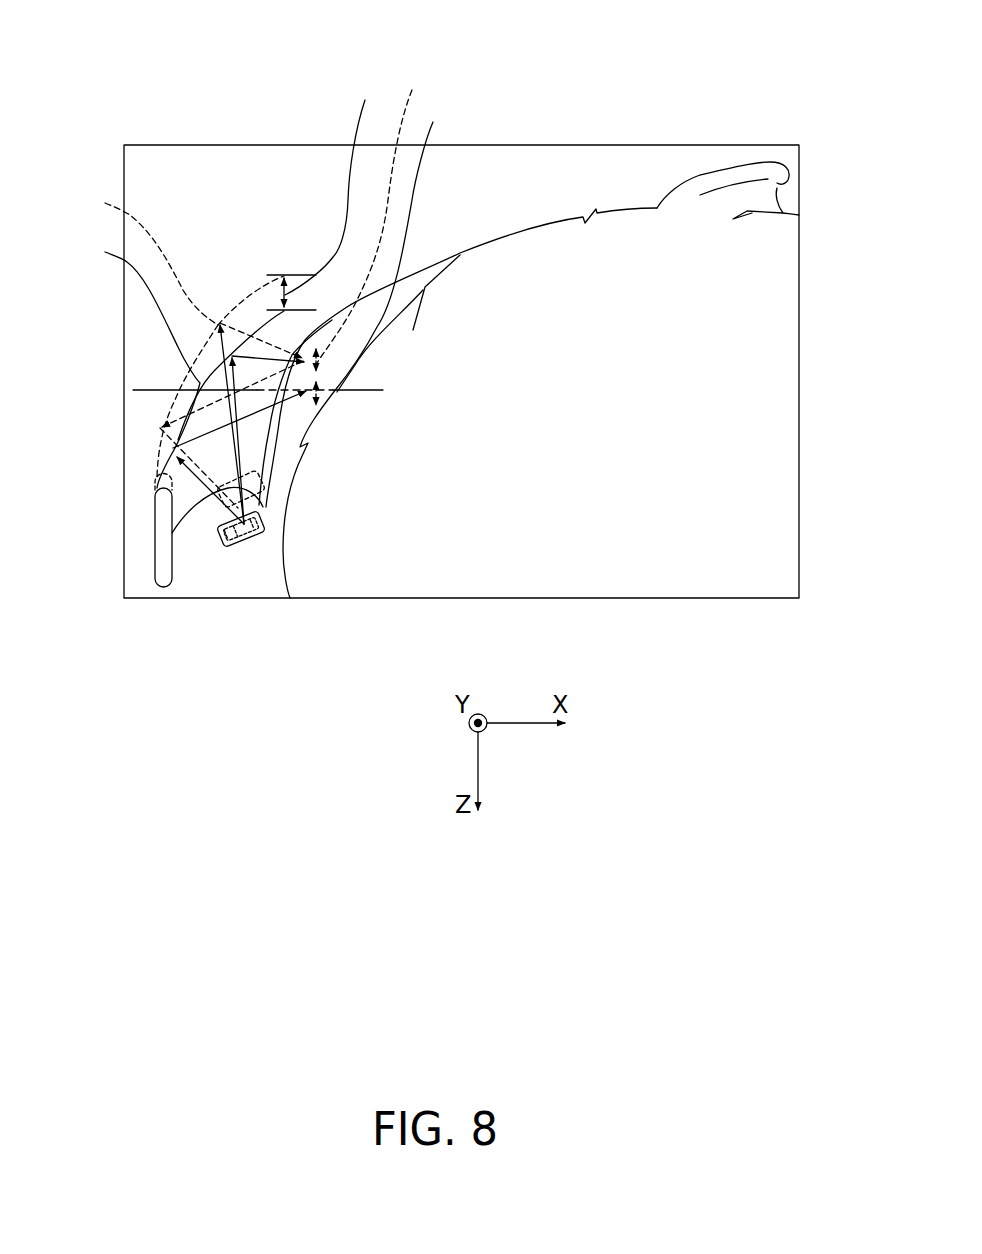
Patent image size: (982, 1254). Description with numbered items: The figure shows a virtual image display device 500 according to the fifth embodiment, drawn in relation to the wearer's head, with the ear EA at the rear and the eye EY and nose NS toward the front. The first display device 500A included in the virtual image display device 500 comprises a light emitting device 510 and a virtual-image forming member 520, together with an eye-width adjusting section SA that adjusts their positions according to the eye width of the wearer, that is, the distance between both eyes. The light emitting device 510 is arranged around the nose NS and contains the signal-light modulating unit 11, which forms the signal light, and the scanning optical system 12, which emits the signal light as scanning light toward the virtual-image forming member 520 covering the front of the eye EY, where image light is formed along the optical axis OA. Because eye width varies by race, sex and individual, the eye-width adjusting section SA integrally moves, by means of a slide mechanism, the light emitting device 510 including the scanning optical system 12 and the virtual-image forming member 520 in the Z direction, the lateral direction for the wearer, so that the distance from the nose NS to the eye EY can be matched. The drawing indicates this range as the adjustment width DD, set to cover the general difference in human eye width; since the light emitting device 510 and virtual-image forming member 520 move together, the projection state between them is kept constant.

The virtual image display device 500 is at (305, 93).
The first display device 500A is at (303, 225).
The light emitting device 510 is at (216, 515).
The virtual-image forming member 520 is at (171, 337).
The signal-light modulating unit 11 is at (228, 545).
The scanning optical system 12 is at (255, 538).
The ear EA is at (760, 182).
The eye EY is at (367, 330).
The adjustment width DD is at (328, 190).
The optical axis OA is at (180, 390).
The eye-width adjusting section SA is at (162, 550).
The nose NS is at (187, 570).